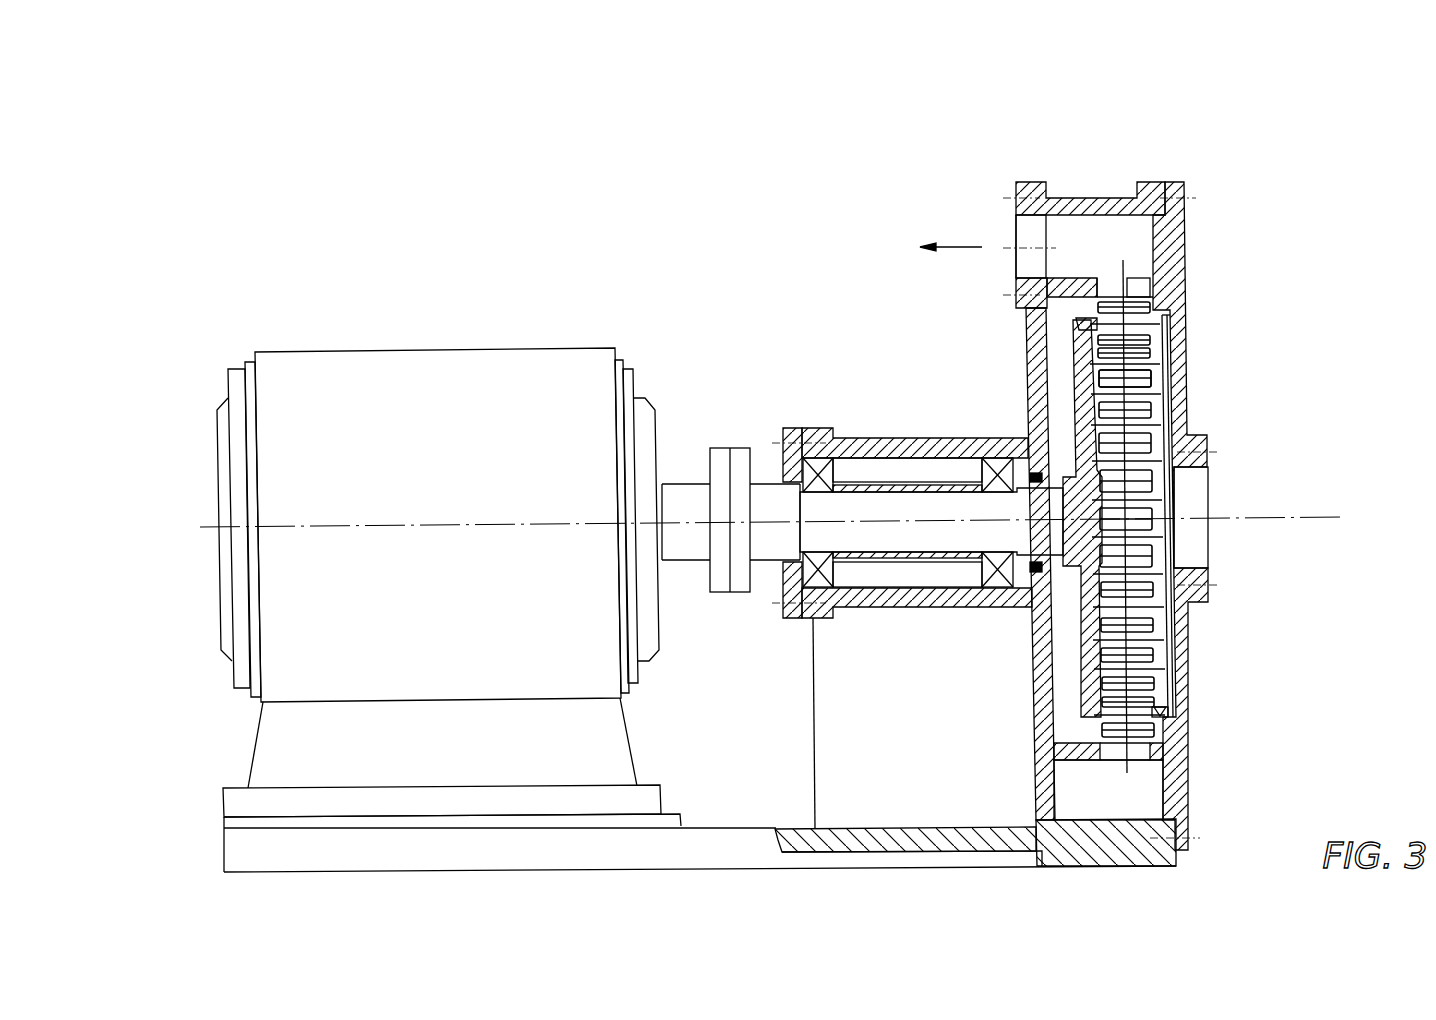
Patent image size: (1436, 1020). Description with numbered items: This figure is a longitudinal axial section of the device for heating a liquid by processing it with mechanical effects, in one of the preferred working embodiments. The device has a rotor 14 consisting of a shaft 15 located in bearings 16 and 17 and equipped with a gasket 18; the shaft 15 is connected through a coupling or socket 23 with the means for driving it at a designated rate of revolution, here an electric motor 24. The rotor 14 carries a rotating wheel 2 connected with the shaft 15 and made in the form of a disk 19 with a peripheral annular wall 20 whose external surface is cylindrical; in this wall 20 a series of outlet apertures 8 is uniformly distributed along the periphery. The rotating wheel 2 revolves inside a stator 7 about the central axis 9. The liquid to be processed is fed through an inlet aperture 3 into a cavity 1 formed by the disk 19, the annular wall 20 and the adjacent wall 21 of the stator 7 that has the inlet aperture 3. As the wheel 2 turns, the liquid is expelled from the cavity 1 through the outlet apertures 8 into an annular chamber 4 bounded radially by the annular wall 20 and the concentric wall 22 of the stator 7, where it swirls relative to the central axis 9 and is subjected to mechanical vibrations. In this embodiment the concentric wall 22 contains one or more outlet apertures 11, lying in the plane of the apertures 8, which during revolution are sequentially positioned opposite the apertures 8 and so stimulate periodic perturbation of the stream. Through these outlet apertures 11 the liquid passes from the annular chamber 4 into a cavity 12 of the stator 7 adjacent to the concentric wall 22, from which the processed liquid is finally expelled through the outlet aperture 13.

The cavity 1 is at (1135, 427).
The rotating wheel 2 is at (1155, 393).
The inlet aperture 3 is at (1190, 490).
The annular chamber 4 is at (1087, 308).
The stator 7 is at (1033, 198).
The outlet apertures 8 is at (1135, 375).
The central axis 9 is at (1260, 517).
The outlet apertures 11 is at (1135, 285).
The cavity 12 is at (1135, 790).
The outlet aperture 13 is at (1033, 237).
The rotor 14 is at (765, 472).
The shaft 15 is at (915, 533).
The bearing 16 is at (950, 440).
The bearing 17 is at (817, 577).
The gasket 18 is at (1035, 567).
The disk 19 is at (1075, 360).
The peripheral annular wall 20 is at (1168, 713).
The wall 21 is at (1180, 640).
The concentric wall 22 is at (1067, 285).
The coupling 23 is at (720, 500).
The electric motor 24 is at (497, 405).